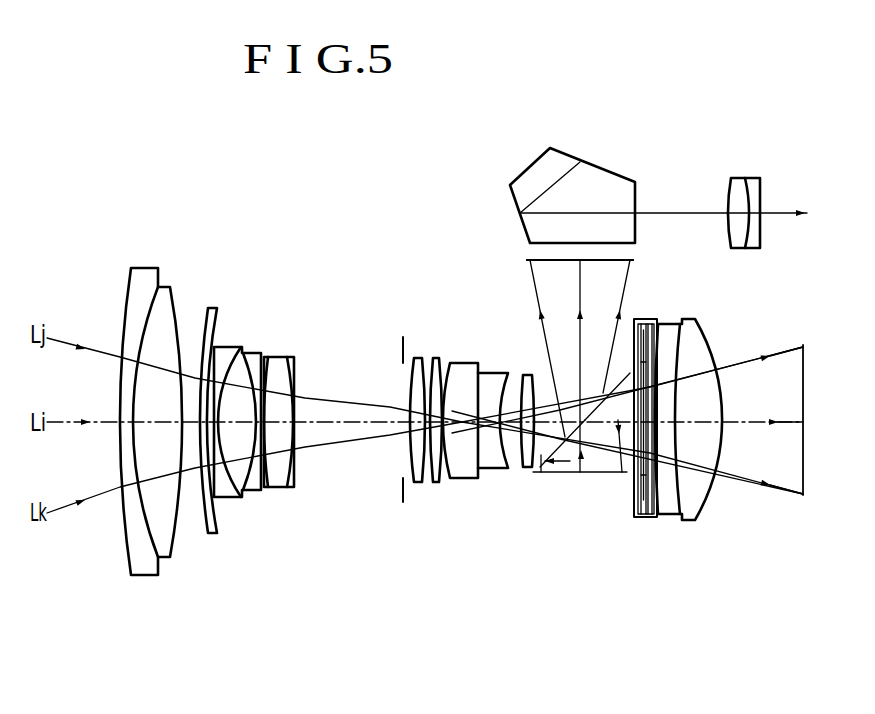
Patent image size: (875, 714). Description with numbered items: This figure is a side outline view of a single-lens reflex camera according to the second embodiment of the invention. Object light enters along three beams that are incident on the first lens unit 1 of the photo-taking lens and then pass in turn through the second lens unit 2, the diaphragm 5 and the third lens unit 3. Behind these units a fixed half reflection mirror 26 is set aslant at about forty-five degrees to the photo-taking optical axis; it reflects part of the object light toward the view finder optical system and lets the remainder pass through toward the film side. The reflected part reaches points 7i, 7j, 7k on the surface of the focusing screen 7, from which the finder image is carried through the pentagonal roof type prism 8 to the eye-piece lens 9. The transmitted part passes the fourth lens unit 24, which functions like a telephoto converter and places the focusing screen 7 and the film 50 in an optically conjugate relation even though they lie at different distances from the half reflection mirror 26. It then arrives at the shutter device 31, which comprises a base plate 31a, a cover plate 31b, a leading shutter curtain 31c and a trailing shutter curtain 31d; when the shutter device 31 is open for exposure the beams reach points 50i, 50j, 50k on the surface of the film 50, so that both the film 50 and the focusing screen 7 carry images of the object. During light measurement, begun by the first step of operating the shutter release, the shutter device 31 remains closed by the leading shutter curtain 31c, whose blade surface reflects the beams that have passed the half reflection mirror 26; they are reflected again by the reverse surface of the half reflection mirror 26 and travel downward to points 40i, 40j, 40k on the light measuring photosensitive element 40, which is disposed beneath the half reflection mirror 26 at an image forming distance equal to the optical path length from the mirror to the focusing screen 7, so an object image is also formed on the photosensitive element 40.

The first lens unit 1 is at (122, 587).
The second lens unit 2 is at (302, 587).
The third lens unit 3 is at (533, 587).
The diaphragm 5 is at (402, 479).
The focusing screen 7 is at (555, 262).
The point on focusing screen 7i is at (590, 259).
The point on focusing screen 7j is at (528, 259).
The point on focusing screen 7k is at (633, 259).
The pentagonal roof type prism 8 is at (562, 160).
The eye-piece lens 9 is at (765, 160).
The fourth lens unit 24 is at (713, 587).
The half reflection mirror 26 is at (630, 370).
The shutter device 31 is at (634, 490).
The base plate 31a is at (635, 522).
The cover plate 31b is at (658, 522).
The leading shutter curtain 31c is at (657, 492).
The trailing shutter curtain 31d is at (652, 320).
The light measuring photosensitive element 40 is at (592, 473).
The point on photo-sensitive element 40i is at (580, 473).
The point on photo-sensitive element 40j is at (542, 472).
The point on photo-sensitive element 40k is at (623, 473).
The film 50 is at (805, 452).
The point on film surface 50i is at (805, 418).
The point on film surface 50j is at (803, 492).
The point on film surface 50k is at (803, 348).